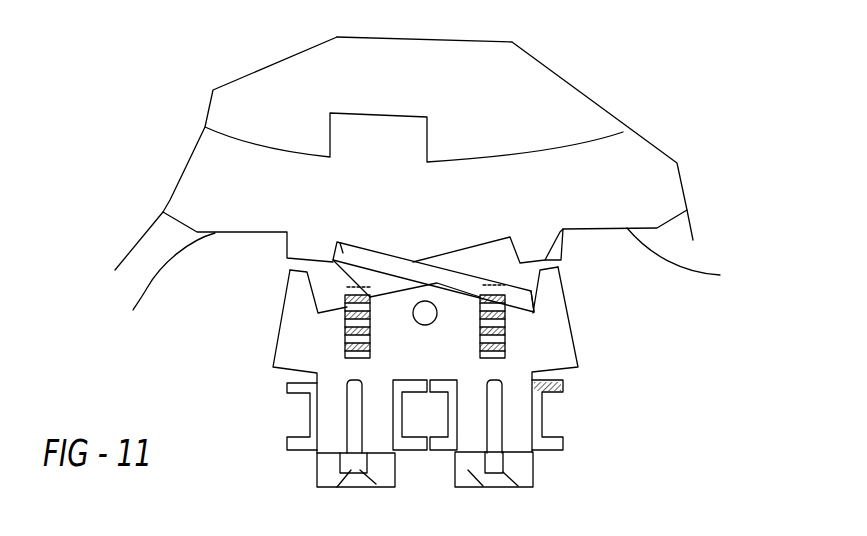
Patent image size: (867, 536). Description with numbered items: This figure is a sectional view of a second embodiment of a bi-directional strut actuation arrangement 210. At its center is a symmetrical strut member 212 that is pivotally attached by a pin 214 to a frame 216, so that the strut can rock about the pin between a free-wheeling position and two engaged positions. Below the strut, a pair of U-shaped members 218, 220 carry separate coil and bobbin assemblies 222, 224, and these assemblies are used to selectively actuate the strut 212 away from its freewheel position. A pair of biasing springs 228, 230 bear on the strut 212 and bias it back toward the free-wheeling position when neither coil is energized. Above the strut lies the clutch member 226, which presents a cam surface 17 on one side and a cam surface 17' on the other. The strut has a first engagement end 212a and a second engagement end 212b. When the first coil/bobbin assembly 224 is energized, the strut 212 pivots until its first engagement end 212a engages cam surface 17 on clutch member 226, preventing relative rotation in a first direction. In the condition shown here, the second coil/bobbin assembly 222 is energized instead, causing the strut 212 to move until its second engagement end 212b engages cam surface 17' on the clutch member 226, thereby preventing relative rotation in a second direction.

The cam surface 17 is at (226, 279).
The cam surface 17' is at (655, 252).
The bi-directional strut actuation arrangement 210 is at (593, 443).
The symmetrical strut member 212 is at (413, 265).
The first engagement end 212a is at (522, 298).
The second engagement end 212b is at (340, 243).
The pin 214 is at (434, 318).
The frame 216 is at (420, 363).
The U-shaped member 218 is at (367, 483).
The U-shaped member 220 is at (475, 482).
The second coil/bobbin assembly 222 is at (287, 443).
The first coil/bobbin assembly 224 is at (542, 417).
The clutch member 226 is at (398, 196).
The biasing spring 228 is at (345, 330).
The biasing spring 230 is at (506, 324).